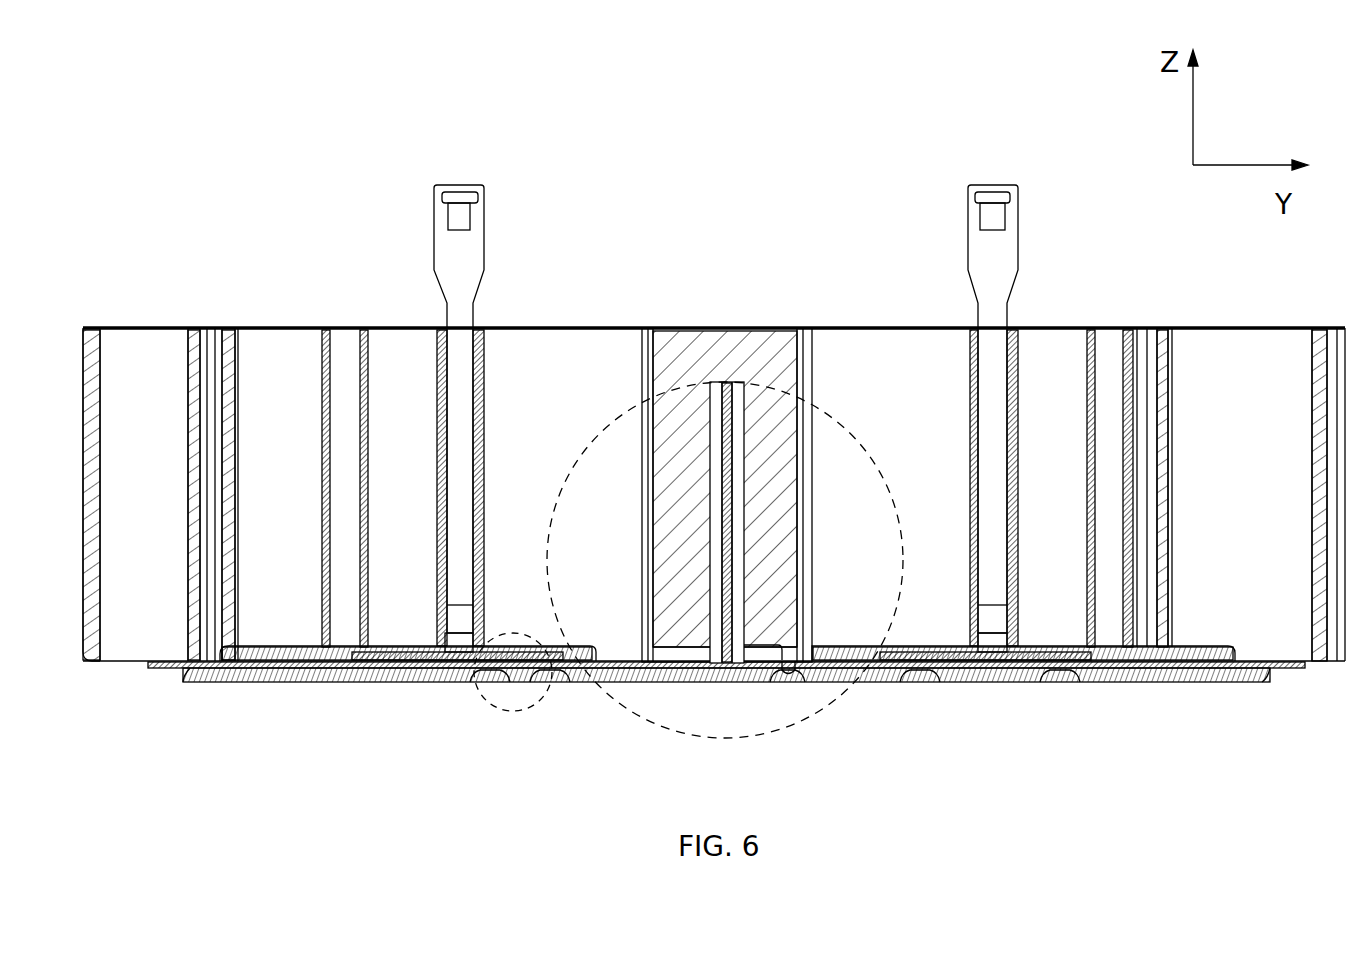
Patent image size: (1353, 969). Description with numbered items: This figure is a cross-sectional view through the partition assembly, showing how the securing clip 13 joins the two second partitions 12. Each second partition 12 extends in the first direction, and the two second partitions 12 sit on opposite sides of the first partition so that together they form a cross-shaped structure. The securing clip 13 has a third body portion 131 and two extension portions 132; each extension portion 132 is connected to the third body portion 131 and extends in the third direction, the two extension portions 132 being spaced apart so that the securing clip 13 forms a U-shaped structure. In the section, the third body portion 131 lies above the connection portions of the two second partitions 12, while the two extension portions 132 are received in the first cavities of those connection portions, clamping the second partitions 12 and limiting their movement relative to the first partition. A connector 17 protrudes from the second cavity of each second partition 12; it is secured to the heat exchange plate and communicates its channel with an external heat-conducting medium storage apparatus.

The second partition 12 is at (523, 326).
The securing clip 13 is at (728, 440).
The third body portion 131 is at (748, 470).
The extension portion 132 is at (678, 442).
The connector 17 is at (452, 253).